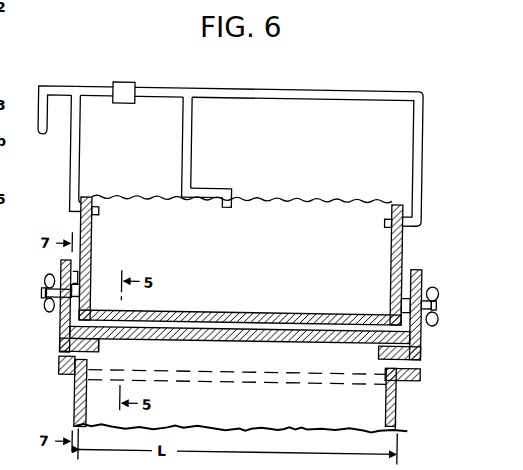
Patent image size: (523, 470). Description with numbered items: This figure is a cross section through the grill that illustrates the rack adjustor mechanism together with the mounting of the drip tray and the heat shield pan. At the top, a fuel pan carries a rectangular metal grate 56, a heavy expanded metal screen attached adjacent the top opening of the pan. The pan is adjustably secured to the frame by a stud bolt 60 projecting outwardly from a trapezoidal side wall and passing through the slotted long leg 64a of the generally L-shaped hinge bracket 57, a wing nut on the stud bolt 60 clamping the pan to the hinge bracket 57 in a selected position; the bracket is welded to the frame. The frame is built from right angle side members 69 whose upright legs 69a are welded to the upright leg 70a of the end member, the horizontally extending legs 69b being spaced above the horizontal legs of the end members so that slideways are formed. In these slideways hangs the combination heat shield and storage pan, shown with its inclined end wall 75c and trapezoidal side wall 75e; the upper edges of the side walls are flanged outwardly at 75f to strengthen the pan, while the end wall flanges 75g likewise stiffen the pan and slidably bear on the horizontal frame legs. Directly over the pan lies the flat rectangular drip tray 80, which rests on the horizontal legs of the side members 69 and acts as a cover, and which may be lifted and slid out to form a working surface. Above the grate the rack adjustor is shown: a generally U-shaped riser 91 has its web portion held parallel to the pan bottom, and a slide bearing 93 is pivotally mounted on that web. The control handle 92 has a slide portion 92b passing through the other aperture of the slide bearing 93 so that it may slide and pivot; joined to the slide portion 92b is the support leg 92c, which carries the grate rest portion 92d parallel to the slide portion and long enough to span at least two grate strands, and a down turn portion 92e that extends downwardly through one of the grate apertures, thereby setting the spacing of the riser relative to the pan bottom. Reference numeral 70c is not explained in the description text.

The metal grate 56 is at (324, 199).
The hinge bracket 57 is at (74, 278).
The stud bolt 60 is at (419, 285).
The long leg of slot 64a is at (61, 278).
The side member 69 is at (60, 350).
The upright leg of side member 69a is at (70, 335).
The horizontally extending leg of side member 69b is at (100, 349).
The upright leg of end frame member 70a is at (185, 348).
The tray flange 70c is at (70, 378).
The inclined end wall 75c is at (213, 420).
The trapezoidal side wall 75e is at (400, 430).
The side wall flange 75f is at (238, 380).
The end wall flange 75g is at (403, 385).
The drip tray 80 is at (288, 345).
The riser 91 is at (258, 99).
The control handle 92 is at (60, 89).
The slide portion 92b is at (170, 89).
The support leg 92c is at (190, 151).
The grate rest portion 92d is at (223, 190).
The down turn portion 92e is at (234, 207).
The slide bearing 93 is at (126, 107).